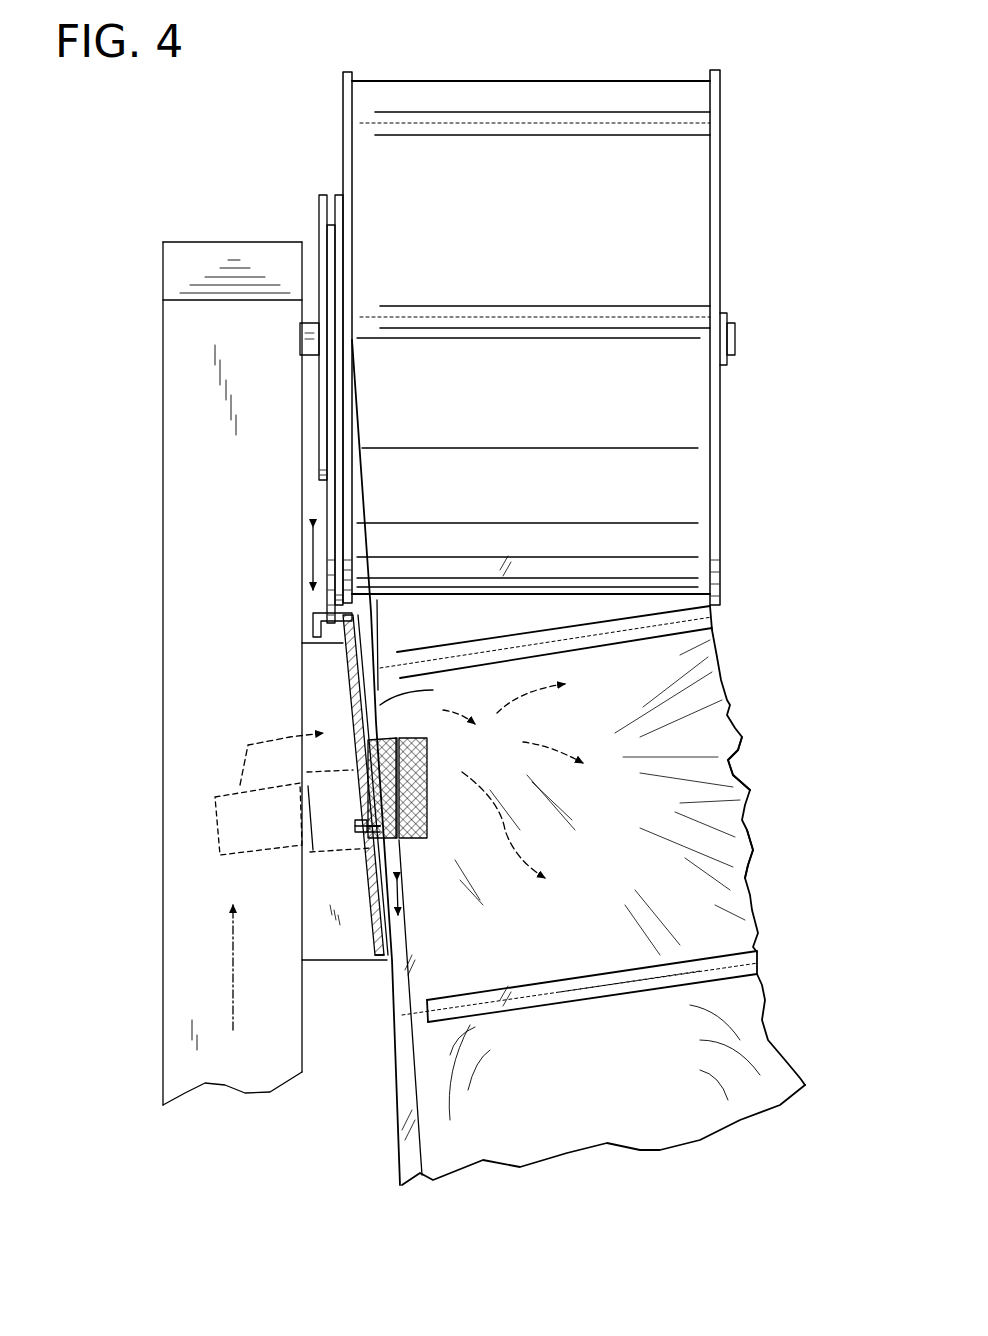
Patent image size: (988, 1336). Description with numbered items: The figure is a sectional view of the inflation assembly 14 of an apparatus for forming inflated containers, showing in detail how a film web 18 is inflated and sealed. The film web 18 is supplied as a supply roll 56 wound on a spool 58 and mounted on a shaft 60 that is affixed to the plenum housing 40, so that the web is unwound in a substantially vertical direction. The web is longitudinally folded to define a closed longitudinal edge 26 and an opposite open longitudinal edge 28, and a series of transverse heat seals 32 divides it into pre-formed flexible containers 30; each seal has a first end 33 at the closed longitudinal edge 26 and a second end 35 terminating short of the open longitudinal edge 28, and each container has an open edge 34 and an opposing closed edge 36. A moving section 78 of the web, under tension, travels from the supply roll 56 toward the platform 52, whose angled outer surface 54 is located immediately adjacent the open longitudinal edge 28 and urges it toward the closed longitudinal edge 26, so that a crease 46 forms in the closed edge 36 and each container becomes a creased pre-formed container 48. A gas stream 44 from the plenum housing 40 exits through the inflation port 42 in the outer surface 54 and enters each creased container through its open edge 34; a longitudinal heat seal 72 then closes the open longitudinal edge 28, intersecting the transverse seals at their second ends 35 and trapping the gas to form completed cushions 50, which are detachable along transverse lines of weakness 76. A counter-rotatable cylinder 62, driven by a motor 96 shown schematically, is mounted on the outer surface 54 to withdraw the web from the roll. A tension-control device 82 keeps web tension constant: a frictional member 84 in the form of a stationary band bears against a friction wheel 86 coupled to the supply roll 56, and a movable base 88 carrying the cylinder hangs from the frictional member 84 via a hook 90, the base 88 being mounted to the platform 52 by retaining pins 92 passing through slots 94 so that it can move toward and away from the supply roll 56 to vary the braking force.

The inflation assembly 14 is at (201, 673).
The film web 18 is at (672, 265).
The closed longitudinal edge 26 is at (748, 877).
The open longitudinal edge 28 is at (370, 678).
The pre-formed flexible container 30 is at (520, 250).
The transverse heat seal 32 is at (660, 110).
The first end 33 is at (752, 932).
The open edge 34 is at (350, 642).
The second end 35 is at (427, 1000).
The closed edge 36 is at (730, 704).
The plenum housing 40 is at (190, 860).
The inflation port 42 is at (420, 691).
The gas stream 44 is at (443, 710).
The crease 46 is at (742, 737).
The creased pre-formed container 48 is at (573, 926).
The completed cushion 50 is at (635, 1095).
The platform 52 is at (323, 932).
The outer surface 54 is at (405, 870).
The supply roll 56 is at (607, 78).
The spool 58 is at (722, 312).
The shaft 60 is at (735, 333).
The cylinder 62 is at (427, 758).
The longitudinal heat seal 72 is at (410, 860).
The transverse line of weakness 76 is at (590, 988).
The moving section 78 is at (385, 620).
The tension-control device 82 is at (293, 570).
The frictional member 84 is at (330, 498).
The friction wheel 86 is at (318, 205).
The movable base 88 is at (390, 962).
The hook 90 is at (313, 626).
The retaining pin 92 is at (355, 828).
The slot 94 is at (372, 842).
The motor 96 is at (215, 803).